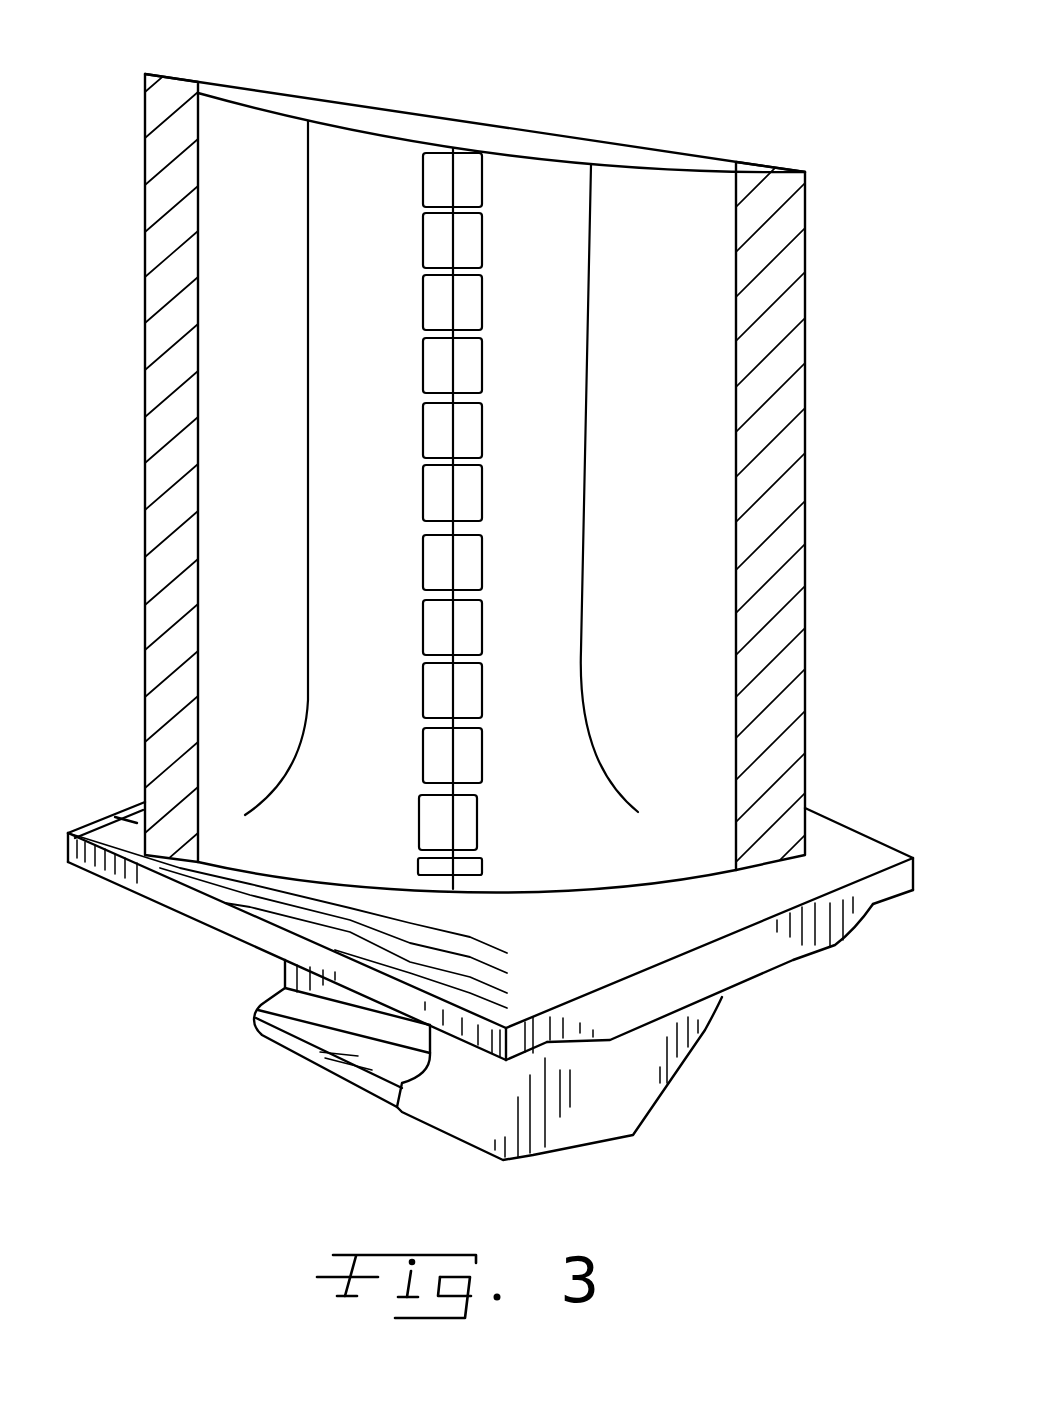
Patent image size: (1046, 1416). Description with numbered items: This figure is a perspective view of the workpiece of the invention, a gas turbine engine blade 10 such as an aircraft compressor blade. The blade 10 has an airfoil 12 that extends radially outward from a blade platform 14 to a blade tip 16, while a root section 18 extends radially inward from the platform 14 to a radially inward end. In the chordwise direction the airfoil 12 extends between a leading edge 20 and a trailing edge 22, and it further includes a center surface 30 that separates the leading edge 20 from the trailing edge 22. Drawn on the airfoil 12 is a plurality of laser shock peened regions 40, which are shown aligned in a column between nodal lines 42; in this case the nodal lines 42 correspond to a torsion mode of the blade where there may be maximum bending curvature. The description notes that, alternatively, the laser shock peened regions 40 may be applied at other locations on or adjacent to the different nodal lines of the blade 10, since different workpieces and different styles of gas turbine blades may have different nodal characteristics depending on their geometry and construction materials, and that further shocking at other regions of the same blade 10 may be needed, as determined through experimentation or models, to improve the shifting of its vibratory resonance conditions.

The blade 10 is at (838, 125).
The airfoil 12 is at (690, 855).
The blade platform 14 is at (765, 958).
The blade tip 16 is at (612, 148).
The root section 18 is at (300, 1040).
The leading edge 20 is at (148, 402).
The trailing edge 22 is at (795, 446).
The center surface 30 is at (345, 175).
The laser shock peened regions 40 is at (470, 247).
The nodal lines 42 is at (308, 145).